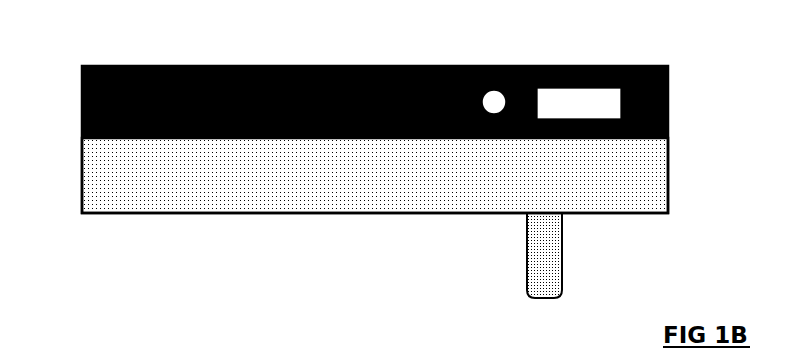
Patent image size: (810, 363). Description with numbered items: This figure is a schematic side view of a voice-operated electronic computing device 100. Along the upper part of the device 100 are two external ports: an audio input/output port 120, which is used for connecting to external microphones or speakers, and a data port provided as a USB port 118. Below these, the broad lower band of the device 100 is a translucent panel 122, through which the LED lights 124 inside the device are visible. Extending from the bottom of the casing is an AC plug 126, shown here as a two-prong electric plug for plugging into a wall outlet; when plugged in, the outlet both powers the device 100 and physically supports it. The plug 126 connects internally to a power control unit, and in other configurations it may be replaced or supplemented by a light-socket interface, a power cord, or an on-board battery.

The electronic computing device 100 is at (82, 155).
The USB port 118 is at (582, 103).
The audio input/output port 120 is at (493, 97).
The translucent panel 122 is at (147, 193).
The LED lights 124 is at (573, 176).
The AC plug 126 is at (540, 268).